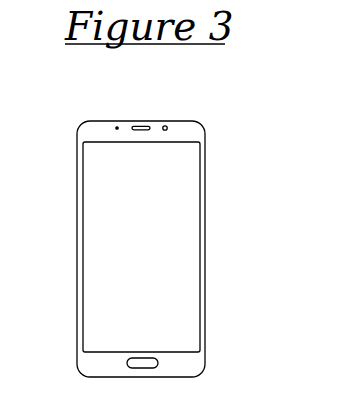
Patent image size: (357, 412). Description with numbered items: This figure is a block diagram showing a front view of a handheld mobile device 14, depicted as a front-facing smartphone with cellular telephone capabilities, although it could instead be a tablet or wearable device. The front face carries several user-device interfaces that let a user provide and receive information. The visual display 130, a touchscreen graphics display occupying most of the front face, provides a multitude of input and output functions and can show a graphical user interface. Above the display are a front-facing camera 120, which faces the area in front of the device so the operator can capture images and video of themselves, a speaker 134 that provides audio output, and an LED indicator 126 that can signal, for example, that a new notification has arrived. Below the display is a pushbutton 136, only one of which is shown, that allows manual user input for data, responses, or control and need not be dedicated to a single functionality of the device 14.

The handheld mobile device 14 is at (209, 237).
The front-facing camera 120 is at (167, 125).
The LED indicator 126 is at (123, 127).
The visual display 130 is at (188, 189).
The speaker 134 is at (141, 126).
The pushbutton 136 is at (158, 363).